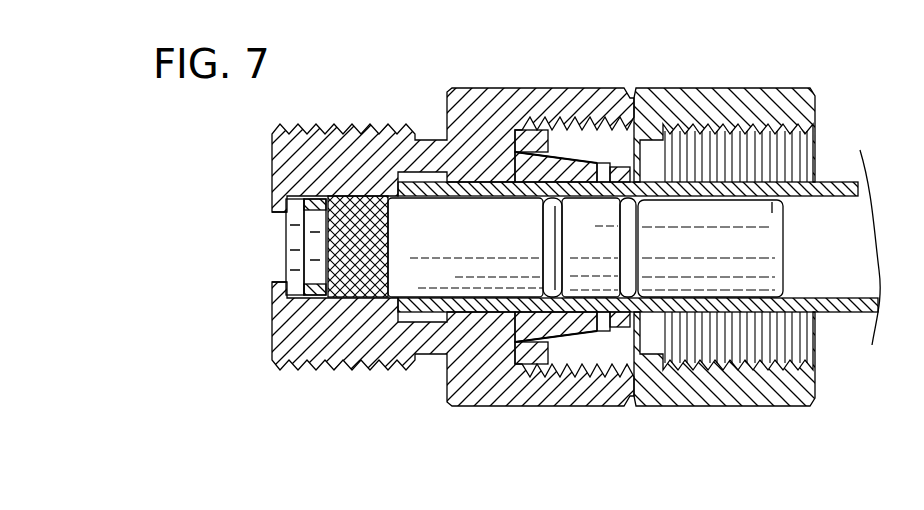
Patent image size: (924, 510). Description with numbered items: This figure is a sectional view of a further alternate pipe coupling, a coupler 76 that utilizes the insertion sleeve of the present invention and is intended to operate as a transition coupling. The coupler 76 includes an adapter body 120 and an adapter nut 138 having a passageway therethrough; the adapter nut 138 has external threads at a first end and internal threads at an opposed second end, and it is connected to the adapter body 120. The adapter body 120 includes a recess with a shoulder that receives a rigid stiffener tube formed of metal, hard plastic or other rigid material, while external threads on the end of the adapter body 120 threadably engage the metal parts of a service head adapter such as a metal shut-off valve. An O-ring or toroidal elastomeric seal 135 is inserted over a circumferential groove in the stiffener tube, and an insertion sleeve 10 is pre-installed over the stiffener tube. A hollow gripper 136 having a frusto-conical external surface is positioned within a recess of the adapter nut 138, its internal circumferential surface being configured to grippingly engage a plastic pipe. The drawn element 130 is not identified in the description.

The insertion sleeve 10 is at (409, 181).
The coupler 76 is at (549, 65).
The adapter body 120 is at (454, 86).
The insert 130 is at (310, 213).
The toroidal elastomeric seal 135 is at (620, 242).
The hollow gripper 136 is at (548, 133).
The adapter nut 138 is at (748, 92).